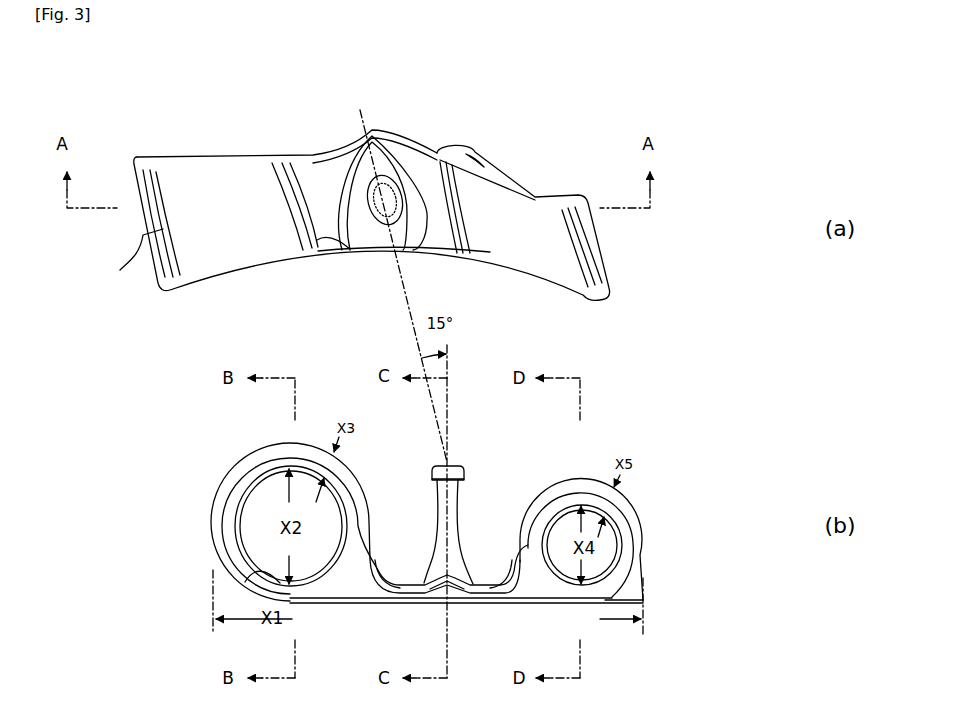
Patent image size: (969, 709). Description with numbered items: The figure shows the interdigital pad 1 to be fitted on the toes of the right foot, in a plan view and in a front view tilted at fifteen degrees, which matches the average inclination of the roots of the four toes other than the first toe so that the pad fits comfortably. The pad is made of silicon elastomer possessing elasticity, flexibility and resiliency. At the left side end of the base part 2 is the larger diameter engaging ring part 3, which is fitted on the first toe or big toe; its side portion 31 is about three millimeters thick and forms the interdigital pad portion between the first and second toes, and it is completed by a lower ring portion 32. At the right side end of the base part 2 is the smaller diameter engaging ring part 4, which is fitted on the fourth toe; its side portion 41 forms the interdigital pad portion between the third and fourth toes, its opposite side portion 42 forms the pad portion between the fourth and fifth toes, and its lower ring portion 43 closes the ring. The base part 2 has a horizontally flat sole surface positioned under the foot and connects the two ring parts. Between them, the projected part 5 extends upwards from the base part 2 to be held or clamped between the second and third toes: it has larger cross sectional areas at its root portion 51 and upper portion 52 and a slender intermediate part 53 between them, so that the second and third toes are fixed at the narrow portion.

The interdigital pad 1 is at (305, 61).
The base part 2 is at (313, 158).
The larger diameter engaging ring part 3 is at (208, 498).
The smaller diameter engaging ring part 4 is at (580, 293).
The projected part 5 is at (385, 165).
The side portion 31 is at (350, 520).
The lower ring portion 32 is at (265, 568).
The side portion 41 is at (517, 540).
The opposite side portion 42 is at (622, 547).
The lower ring portion 43 is at (618, 590).
The root portion 51 is at (478, 605).
The upper portion 52 is at (458, 467).
The intermediate part 53 is at (437, 515).